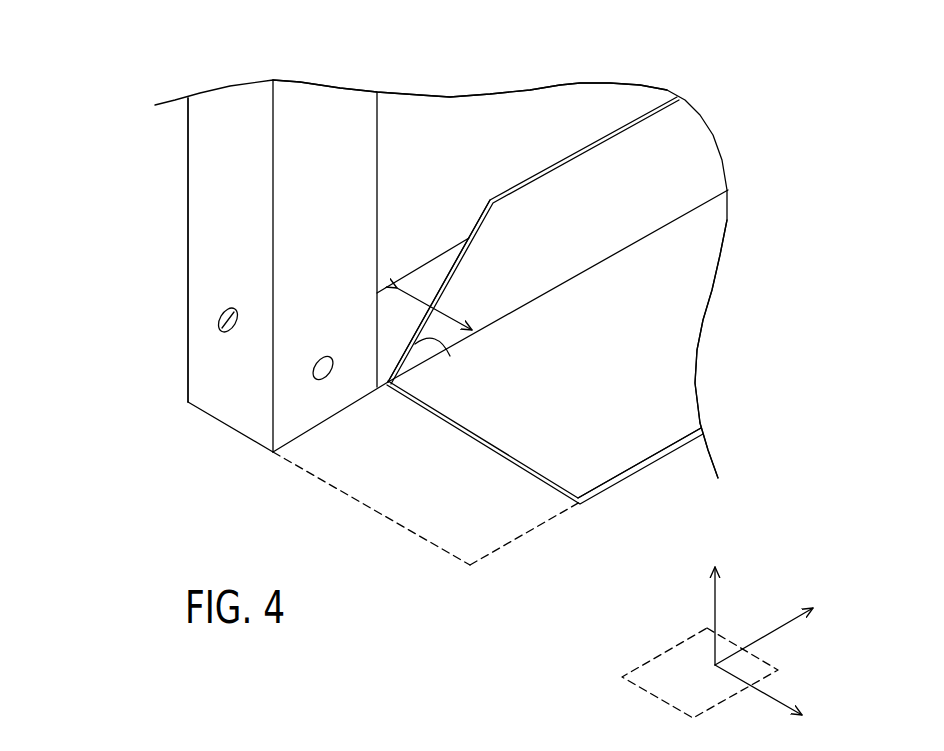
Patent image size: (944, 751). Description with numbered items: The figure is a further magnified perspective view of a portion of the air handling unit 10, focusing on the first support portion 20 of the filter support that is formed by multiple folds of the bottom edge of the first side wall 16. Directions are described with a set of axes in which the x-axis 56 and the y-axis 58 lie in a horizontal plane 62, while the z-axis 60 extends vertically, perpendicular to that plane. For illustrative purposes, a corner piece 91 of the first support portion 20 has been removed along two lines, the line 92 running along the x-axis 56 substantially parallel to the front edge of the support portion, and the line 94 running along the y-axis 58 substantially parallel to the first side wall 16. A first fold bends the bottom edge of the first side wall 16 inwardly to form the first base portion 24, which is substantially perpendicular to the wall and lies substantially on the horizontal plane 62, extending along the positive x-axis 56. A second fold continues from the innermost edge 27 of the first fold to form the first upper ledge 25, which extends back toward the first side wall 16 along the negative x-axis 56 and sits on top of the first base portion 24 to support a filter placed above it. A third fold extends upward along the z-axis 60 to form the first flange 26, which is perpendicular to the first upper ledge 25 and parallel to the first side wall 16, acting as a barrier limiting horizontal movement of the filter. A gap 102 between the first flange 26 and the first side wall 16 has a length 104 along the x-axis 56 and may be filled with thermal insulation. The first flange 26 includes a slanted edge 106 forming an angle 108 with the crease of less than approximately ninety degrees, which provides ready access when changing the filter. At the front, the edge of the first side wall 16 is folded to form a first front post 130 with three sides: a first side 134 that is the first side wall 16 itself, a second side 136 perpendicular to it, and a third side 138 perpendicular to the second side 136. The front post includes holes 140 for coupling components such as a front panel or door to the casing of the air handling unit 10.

The air handling unit 10 is at (497, 50).
The first side wall 16 is at (430, 113).
The first support portion 20 is at (670, 370).
The first base portion 24 is at (383, 365).
The first upper ledge 25 is at (600, 458).
The first flange 26 is at (630, 118).
The innermost edge 27 is at (668, 450).
The x-axis 56 is at (765, 693).
The y-axis 58 is at (777, 625).
The z-axis 60 is at (715, 618).
The horizontal plane 62 is at (662, 698).
The corner piece 91 is at (423, 513).
The line 92 is at (545, 487).
The line 94 is at (302, 437).
The gap 102 is at (422, 288).
The length 104 is at (418, 298).
The slanted edge 106 is at (468, 233).
The angle 108 is at (443, 344).
The first front post 130 is at (212, 193).
The first side 134 is at (188, 247).
The second side 136 is at (240, 412).
The third side 138 is at (322, 397).
The holes 140 is at (223, 333).